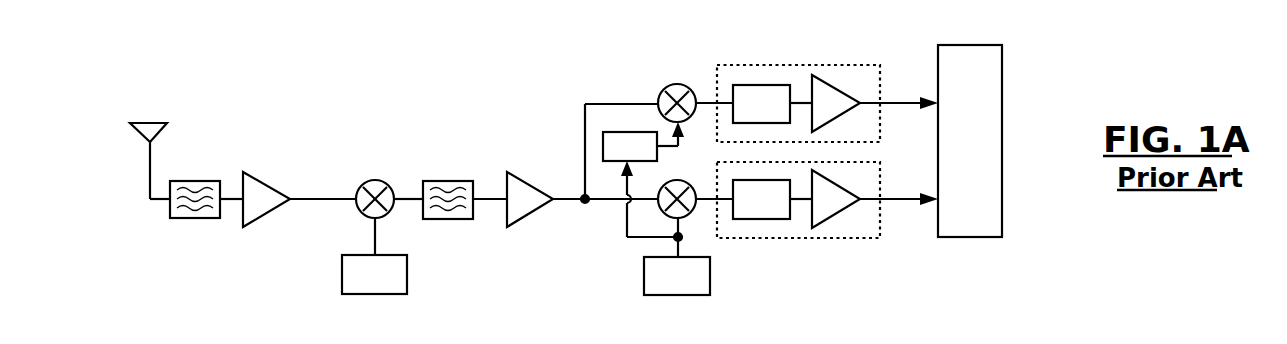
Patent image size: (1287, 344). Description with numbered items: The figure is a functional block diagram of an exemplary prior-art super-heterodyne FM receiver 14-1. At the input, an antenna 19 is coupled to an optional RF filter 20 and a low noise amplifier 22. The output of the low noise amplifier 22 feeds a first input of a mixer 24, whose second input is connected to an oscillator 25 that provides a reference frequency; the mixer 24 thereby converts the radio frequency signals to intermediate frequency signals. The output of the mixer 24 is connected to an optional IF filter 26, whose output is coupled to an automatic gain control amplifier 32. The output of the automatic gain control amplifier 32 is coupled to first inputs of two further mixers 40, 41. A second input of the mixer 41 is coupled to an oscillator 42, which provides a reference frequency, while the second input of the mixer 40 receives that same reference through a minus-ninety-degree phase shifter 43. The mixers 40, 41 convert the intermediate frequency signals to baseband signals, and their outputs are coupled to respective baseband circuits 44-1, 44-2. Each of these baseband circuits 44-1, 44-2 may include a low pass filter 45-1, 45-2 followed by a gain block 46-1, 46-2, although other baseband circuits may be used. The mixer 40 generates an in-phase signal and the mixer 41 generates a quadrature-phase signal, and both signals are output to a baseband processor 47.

The super-heterodyne receiver 14-1 is at (316, 58).
The antenna 19 is at (158, 130).
The RF filter 20 is at (190, 220).
The low noise amplifier 22 is at (263, 180).
The mixer 24 is at (367, 180).
The oscillator 25 is at (407, 268).
The IF filter 26 is at (447, 180).
The automatic gain control amplifier 32 is at (530, 180).
The mixer 40 is at (660, 92).
The mixer 41 is at (690, 215).
The oscillator 42 is at (643, 287).
The −90° phase shifter 43 is at (658, 160).
The BB circuit 44-1 is at (757, 65).
The BB circuit 44-2 is at (878, 222).
The low pass filter 45-1 is at (765, 85).
The low pass filter 45-2 is at (762, 220).
The gain block 46-1 is at (837, 83).
The gain block 46-2 is at (833, 220).
The BB processor 47 is at (1002, 120).